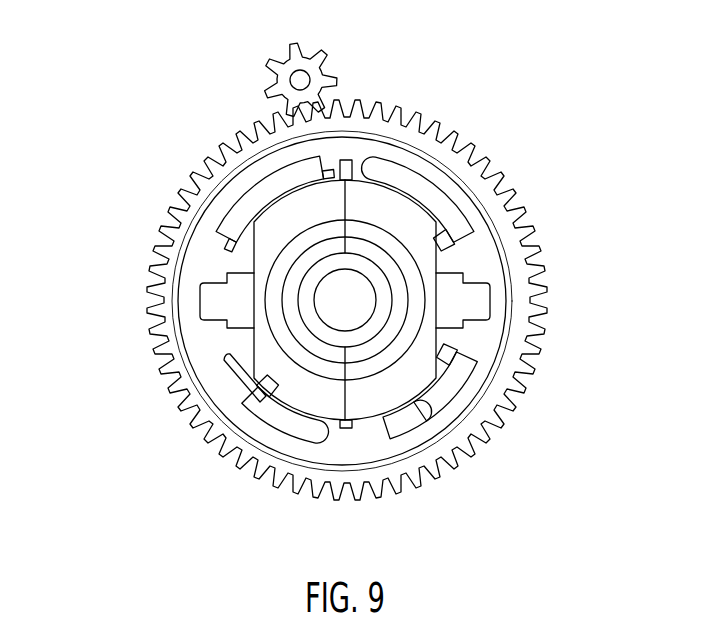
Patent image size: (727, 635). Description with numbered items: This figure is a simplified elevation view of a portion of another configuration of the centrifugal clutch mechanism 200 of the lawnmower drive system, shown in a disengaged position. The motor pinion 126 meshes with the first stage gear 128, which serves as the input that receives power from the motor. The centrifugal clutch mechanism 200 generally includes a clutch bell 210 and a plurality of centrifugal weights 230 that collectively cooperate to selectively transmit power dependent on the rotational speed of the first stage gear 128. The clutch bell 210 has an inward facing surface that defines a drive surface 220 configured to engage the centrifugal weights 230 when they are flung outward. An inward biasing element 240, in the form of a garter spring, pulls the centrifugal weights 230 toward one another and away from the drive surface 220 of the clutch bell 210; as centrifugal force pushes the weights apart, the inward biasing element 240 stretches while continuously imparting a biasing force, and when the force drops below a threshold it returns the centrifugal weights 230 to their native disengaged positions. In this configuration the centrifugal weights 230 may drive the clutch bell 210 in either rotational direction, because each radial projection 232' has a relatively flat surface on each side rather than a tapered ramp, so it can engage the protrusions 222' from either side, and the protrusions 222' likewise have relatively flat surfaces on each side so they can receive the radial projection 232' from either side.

The centrifugal clutch mechanism 200 is at (158, 78).
The motor pinion 126 is at (330, 42).
The first stage gear 128 is at (478, 442).
The clutch bell 210 is at (408, 153).
The inward biasing element 240 is at (388, 240).
The radial projection 232' is at (523, 296).
The protrusion 222' is at (391, 477).
The drive surface 220 is at (447, 430).
The centrifugal weights 230 is at (300, 386).